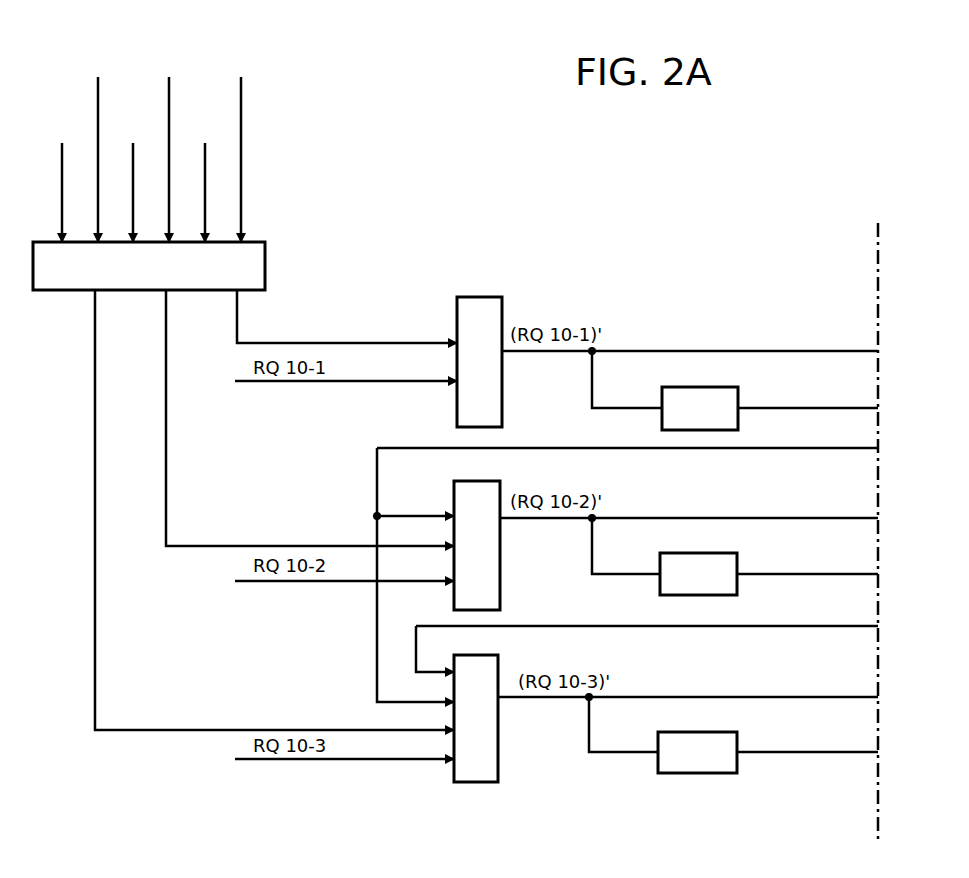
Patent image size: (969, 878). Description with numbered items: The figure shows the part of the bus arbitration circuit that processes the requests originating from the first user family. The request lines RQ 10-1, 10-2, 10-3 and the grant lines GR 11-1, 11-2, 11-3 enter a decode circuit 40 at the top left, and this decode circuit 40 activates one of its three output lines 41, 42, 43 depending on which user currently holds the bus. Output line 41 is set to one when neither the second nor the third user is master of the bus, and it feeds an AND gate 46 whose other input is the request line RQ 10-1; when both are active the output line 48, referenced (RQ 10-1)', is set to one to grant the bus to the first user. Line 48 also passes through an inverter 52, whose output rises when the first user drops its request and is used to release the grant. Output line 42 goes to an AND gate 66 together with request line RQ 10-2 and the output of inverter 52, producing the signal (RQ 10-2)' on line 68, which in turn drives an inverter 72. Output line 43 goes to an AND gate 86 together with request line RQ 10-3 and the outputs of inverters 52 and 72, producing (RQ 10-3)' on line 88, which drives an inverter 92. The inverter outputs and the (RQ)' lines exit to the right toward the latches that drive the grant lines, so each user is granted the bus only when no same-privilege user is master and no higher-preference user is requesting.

The decode circuit 40 is at (255, 242).
The output line 41 is at (268, 343).
The output line 42 is at (197, 546).
The output line 43 is at (118, 730).
The AND gate 46 is at (502, 312).
The output line (RQ 10-1)' 48 is at (685, 352).
The inverter 52 is at (740, 398).
The AND gate 66 is at (500, 495).
The output line (RQ 10-2)' 68 is at (683, 519).
The inverter 72 is at (740, 565).
The AND gate 86 is at (500, 683).
The output line (RQ 10-3)' 88 is at (683, 698).
The inverter 92 is at (738, 745).
The request line RQ 10-1 is at (61, 165).
The request line RQ 10-2 is at (132, 165).
The request line RQ 10-3 is at (204, 165).
The grant line GR 11-1 is at (97, 132).
The grant line GR 11-2 is at (168, 132).
The grant line GR 11-3 is at (240, 132).